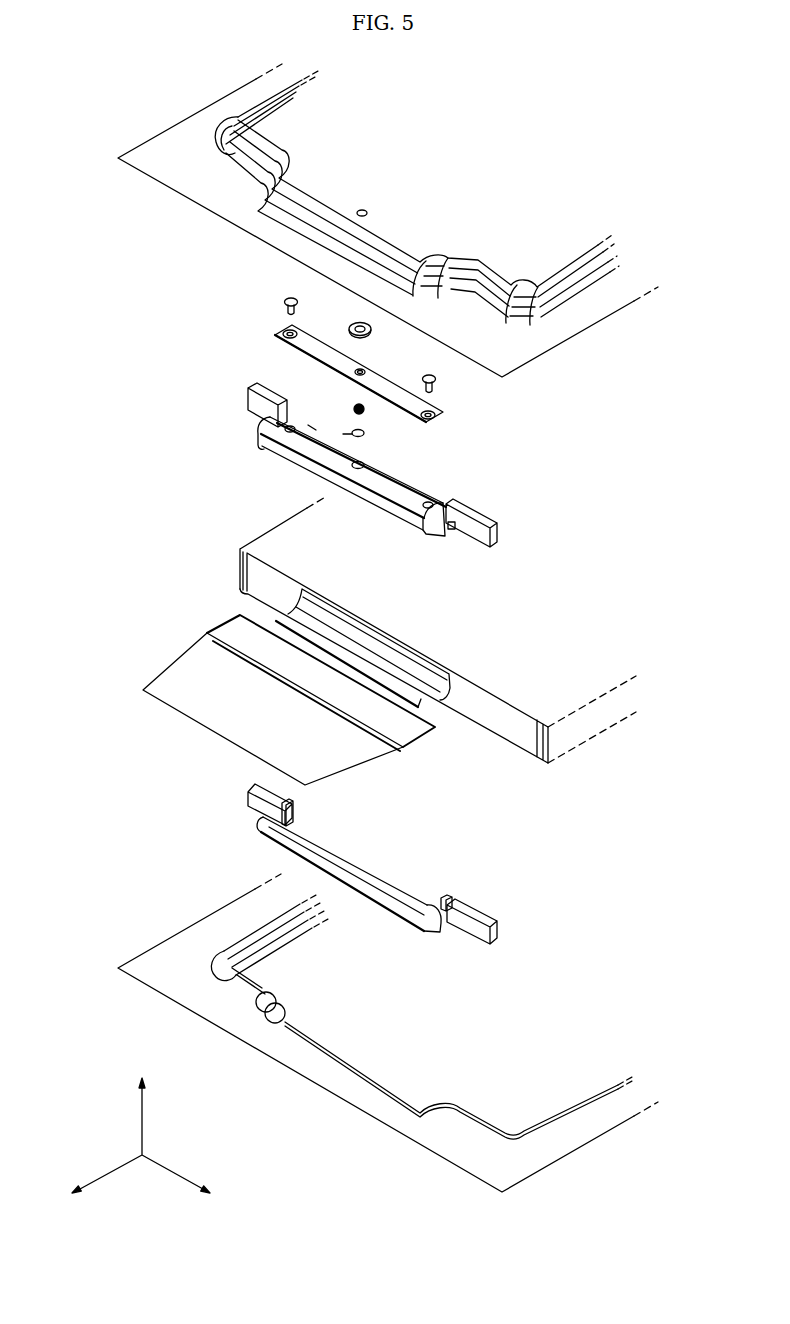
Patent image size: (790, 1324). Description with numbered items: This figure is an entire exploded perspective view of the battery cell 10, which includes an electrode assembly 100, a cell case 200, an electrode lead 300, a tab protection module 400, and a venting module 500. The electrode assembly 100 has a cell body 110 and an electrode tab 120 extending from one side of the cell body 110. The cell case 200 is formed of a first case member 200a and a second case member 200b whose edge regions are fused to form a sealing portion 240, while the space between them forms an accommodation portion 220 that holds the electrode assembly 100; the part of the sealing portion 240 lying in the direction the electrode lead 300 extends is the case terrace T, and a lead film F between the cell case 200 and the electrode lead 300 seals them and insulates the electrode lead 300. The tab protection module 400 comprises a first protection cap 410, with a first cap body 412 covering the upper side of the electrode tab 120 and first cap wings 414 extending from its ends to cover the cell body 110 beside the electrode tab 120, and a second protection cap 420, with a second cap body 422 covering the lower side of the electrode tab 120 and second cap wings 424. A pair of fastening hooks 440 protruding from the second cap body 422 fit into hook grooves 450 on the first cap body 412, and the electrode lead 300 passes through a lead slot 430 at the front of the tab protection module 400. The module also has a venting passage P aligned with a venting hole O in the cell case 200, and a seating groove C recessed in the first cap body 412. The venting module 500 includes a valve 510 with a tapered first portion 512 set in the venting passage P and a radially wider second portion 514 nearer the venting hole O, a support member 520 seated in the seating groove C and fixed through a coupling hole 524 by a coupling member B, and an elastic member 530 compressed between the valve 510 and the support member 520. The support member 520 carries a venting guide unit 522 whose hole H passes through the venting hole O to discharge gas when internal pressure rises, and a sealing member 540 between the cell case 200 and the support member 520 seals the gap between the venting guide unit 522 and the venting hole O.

The battery cell 10 is at (91, 138).
The electrode assembly 100 is at (645, 692).
The cell body 110 is at (577, 727).
The electrode tab 120 is at (441, 700).
The cell case 200 is at (140, 190).
The first case member 200a is at (572, 257).
The second case member 200b is at (597, 1117).
The accommodation portion 220 is at (523, 1106).
The sealing portion 240 is at (604, 311).
The electrode lead 300 is at (191, 678).
The tab protection module 400 is at (210, 460).
The first protection cap 410 is at (250, 440).
The first cap body 412 is at (305, 455).
The first cap wing 414 is at (258, 405).
The second protection cap 420 is at (371, 851).
The second cap body 422 is at (356, 885).
The second cap wing 424 is at (472, 927).
The lead slot 430 is at (280, 460).
The fastening hook 440 is at (291, 808).
The hook groove 450 is at (452, 531).
The venting module 500 is at (249, 327).
The valve 510 is at (468, 430).
The first portion 512 is at (365, 466).
The second portion 514 is at (366, 433).
The support member 520 is at (433, 393).
The venting guide unit 522 is at (365, 373).
The coupling hole 524 is at (434, 415).
The elastic member 530 is at (353, 409).
The sealing member 540 is at (349, 329).
The coupling member B is at (285, 292).
The seating groove C is at (312, 430).
The lead film F is at (232, 627).
The hole H is at (361, 358).
The venting hole O is at (365, 206).
The venting passage P is at (342, 424).
The case terrace T is at (222, 195).